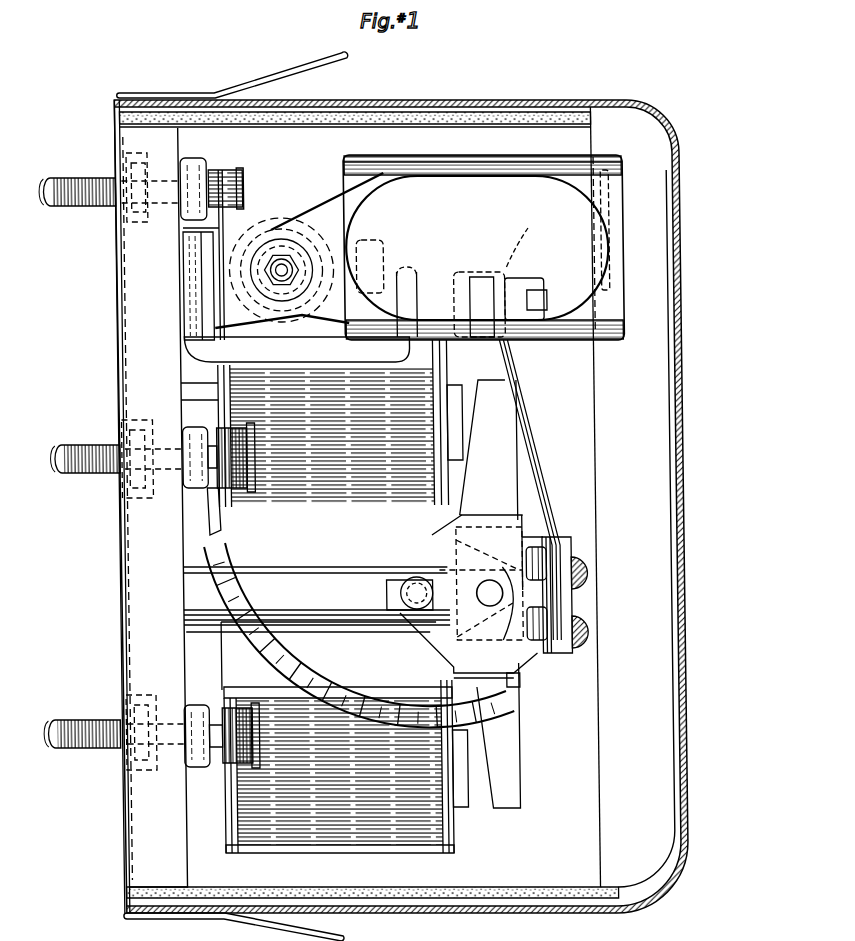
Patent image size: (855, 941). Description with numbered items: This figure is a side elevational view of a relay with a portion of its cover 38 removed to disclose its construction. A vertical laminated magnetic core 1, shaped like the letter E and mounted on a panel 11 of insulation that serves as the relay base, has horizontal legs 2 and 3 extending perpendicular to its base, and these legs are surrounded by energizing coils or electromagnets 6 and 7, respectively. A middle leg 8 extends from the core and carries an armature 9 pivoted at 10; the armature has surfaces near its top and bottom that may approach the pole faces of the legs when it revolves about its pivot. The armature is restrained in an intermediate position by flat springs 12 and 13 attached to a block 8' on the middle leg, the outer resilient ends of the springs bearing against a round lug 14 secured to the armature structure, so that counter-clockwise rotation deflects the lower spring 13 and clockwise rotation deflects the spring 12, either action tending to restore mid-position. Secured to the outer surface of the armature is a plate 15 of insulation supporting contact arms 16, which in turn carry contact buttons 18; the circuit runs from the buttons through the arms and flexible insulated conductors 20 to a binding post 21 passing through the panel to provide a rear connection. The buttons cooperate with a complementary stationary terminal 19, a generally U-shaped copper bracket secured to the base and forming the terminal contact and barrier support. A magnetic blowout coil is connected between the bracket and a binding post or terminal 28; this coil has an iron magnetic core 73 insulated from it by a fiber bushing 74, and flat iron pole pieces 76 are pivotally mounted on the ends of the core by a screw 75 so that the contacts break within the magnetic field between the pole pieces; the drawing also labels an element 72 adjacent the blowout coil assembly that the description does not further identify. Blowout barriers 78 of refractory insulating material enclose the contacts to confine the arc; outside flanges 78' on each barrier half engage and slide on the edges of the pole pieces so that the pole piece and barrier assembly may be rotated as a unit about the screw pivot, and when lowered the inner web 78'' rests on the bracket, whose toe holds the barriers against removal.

The laminated magnetic core 1 is at (198, 642).
The leg 2 is at (452, 388).
The leg 3 is at (452, 800).
The energizing coil 6 is at (440, 368).
The energizing coil 7 is at (418, 845).
The middle leg 8 is at (315, 556).
The block 8' is at (317, 611).
The armature 9 is at (490, 450).
The pivot 10 is at (492, 584).
The panel 11 is at (122, 365).
The flat spring 12 is at (430, 563).
The flat spring 13 is at (433, 618).
The round lug 14 is at (400, 580).
The plate of insulation 15 is at (559, 537).
The contact arm 16 is at (514, 366).
The contact button 18 is at (465, 277).
The stationary terminal 19 is at (403, 268).
The flexible insulated conductor 20 is at (507, 703).
The binding post 21 is at (88, 476).
The binding post 28 is at (90, 177).
The cover 38 is at (682, 422).
The bracket 72 is at (182, 310).
The magnetic core 73 is at (271, 238).
The fiber bushing 74 is at (247, 214).
The screw 75 is at (307, 240).
The pole piece 76 is at (338, 195).
The blowout barrier 78 is at (484, 237).
The outside flange 78' is at (482, 148).
The inner web 78'' is at (386, 250).